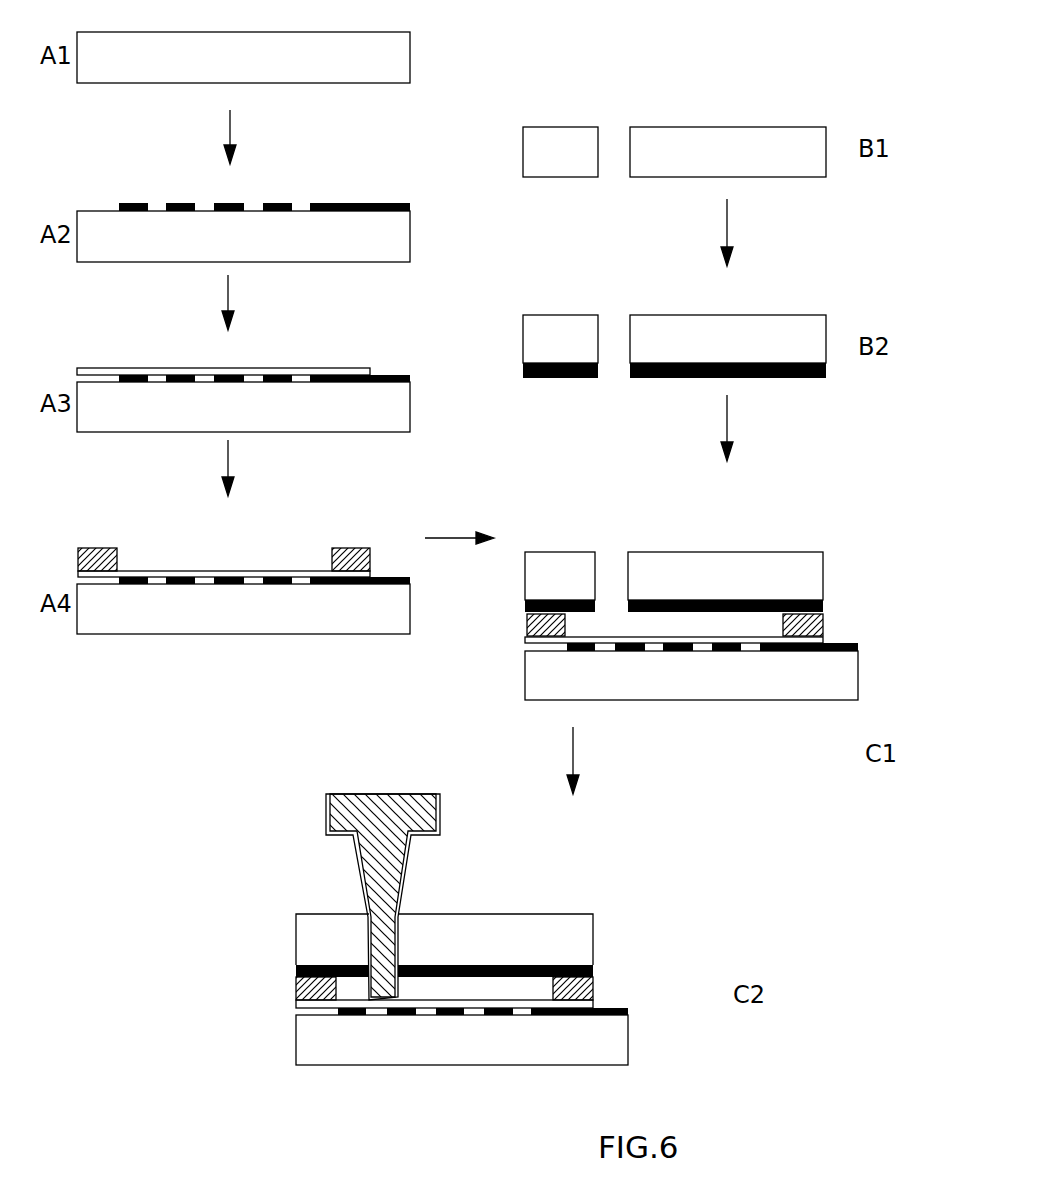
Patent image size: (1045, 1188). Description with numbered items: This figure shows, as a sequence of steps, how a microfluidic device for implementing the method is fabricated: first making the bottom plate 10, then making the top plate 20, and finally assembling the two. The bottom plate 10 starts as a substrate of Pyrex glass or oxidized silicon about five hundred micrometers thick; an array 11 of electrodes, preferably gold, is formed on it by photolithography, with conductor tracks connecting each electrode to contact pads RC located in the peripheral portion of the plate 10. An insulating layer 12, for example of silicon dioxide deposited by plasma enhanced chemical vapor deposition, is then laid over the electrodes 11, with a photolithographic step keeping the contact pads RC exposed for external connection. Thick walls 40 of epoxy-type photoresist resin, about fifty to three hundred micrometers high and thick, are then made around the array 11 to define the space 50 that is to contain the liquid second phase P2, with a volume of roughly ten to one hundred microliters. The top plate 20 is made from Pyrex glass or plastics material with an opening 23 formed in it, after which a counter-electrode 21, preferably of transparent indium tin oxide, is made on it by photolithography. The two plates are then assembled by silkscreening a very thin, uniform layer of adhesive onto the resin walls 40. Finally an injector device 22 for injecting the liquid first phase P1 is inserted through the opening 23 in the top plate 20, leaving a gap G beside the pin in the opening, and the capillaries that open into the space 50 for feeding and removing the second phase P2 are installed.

The bottom plate 10 is at (410, 47).
The array of electrodes 11 is at (252, 185).
The insulating layer 12 is at (110, 368).
The top plate 20 is at (828, 145).
The counter-electrode 21 is at (780, 378).
The injector device 22 is at (407, 858).
The opening 23 is at (630, 138).
The thick walls 40 is at (118, 553).
The space 50 is at (685, 627).
The contact pads RC is at (365, 203).
The liquid first phase P1 is at (375, 808).
The liquid second phase P2 is at (500, 963).
The gap G is at (368, 1003).